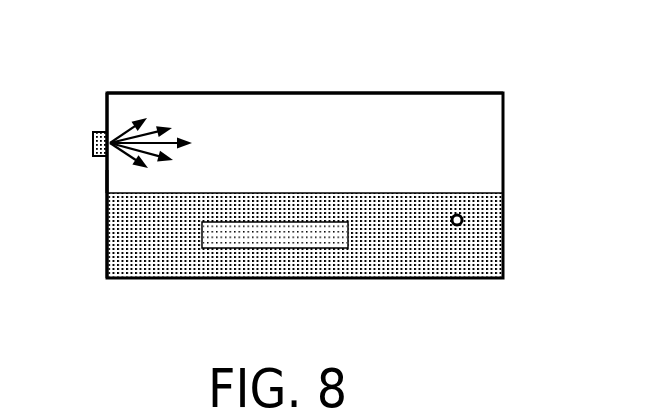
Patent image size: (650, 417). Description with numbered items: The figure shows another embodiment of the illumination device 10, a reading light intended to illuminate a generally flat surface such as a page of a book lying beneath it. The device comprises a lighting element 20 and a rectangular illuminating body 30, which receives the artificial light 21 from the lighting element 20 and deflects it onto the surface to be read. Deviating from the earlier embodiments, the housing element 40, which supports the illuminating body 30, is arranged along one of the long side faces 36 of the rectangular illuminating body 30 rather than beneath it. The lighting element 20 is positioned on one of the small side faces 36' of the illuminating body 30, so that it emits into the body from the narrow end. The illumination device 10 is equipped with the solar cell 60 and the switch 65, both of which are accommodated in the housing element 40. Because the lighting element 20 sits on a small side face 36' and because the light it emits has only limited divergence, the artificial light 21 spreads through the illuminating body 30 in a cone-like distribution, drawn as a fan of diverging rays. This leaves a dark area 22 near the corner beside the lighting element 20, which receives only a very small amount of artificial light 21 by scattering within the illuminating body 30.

The illumination device 10 is at (608, 104).
The lighting element 20 is at (93, 143).
The artificial light 21 is at (153, 130).
The dark area 22 is at (112, 108).
The illuminating body 30 is at (412, 85).
The long side face 36 is at (305, 59).
The small side face 36' is at (70, 188).
The housing element 40 is at (160, 255).
The solar cell 60 is at (266, 240).
The switch 65 is at (463, 221).